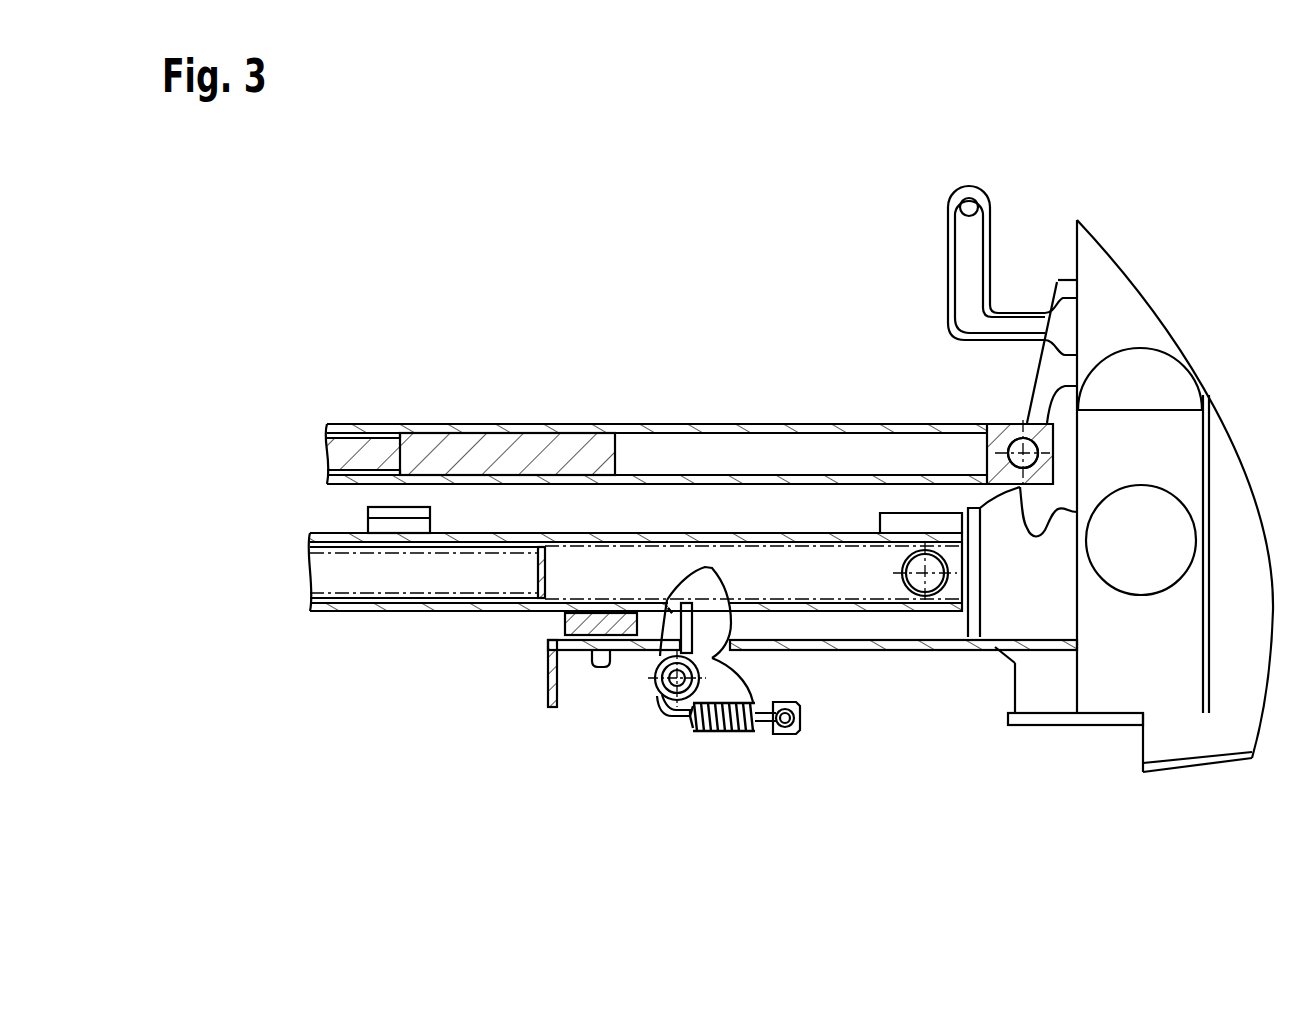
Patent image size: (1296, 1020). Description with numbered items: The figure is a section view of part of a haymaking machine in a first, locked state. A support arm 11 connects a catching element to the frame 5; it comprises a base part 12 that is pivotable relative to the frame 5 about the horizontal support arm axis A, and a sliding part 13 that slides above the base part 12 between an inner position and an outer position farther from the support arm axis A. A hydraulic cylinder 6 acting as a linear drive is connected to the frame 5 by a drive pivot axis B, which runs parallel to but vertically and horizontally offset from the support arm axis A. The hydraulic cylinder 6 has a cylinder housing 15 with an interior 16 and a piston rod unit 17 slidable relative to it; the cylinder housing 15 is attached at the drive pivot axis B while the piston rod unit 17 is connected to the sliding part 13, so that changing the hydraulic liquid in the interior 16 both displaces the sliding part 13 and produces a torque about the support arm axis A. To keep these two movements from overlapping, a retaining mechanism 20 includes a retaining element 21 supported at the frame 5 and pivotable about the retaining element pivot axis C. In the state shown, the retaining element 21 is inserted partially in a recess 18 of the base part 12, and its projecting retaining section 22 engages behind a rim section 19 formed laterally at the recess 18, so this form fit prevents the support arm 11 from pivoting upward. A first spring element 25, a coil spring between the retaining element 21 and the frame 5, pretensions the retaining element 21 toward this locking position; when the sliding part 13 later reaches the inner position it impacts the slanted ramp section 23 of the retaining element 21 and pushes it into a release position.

The frame 5 is at (1088, 798).
The hydraulic cylinder 6 is at (556, 370).
The support arm 11 is at (442, 622).
The base part 12 is at (474, 612).
The sliding part 13 is at (340, 580).
The cylinder housing 15 is at (776, 424).
The interior 16 is at (837, 441).
The piston rod unit 17 is at (633, 432).
The recess 18 is at (749, 624).
The rim section 19 is at (669, 620).
The retaining mechanism 20 is at (688, 768).
The retaining element 21 is at (770, 728).
The retaining section 22 is at (670, 610).
The slanted ramp section 23 is at (678, 570).
The first spring element 25 is at (725, 733).
The support arm axis A is at (936, 589).
The drive pivot axis B is at (1020, 440).
The retaining element pivot axis C is at (675, 681).